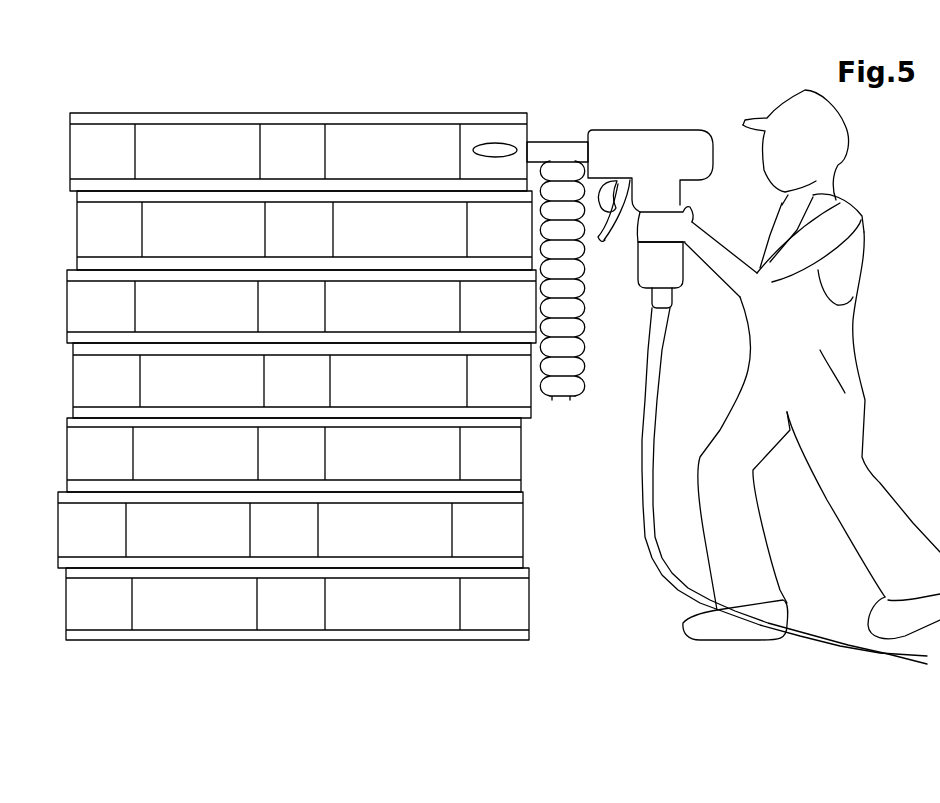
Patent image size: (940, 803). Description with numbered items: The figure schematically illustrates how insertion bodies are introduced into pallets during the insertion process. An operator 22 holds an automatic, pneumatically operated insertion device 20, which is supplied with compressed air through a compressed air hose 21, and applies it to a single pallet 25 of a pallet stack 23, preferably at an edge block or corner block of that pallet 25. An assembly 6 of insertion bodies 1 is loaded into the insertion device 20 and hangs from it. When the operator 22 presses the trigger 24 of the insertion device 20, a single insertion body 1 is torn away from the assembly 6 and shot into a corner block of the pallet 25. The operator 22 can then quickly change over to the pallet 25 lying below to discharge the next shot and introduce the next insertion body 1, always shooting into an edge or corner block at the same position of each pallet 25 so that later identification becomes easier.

The insertion body 1 is at (497, 143).
The assembly of insertion bodies 6 is at (590, 347).
The insertion device 20 is at (692, 128).
The compressed air hose 21 is at (640, 521).
The operator 22 is at (893, 235).
The pallet stack 23 is at (244, 97).
The trigger 24 is at (612, 243).
The pallet 25 is at (318, 212).